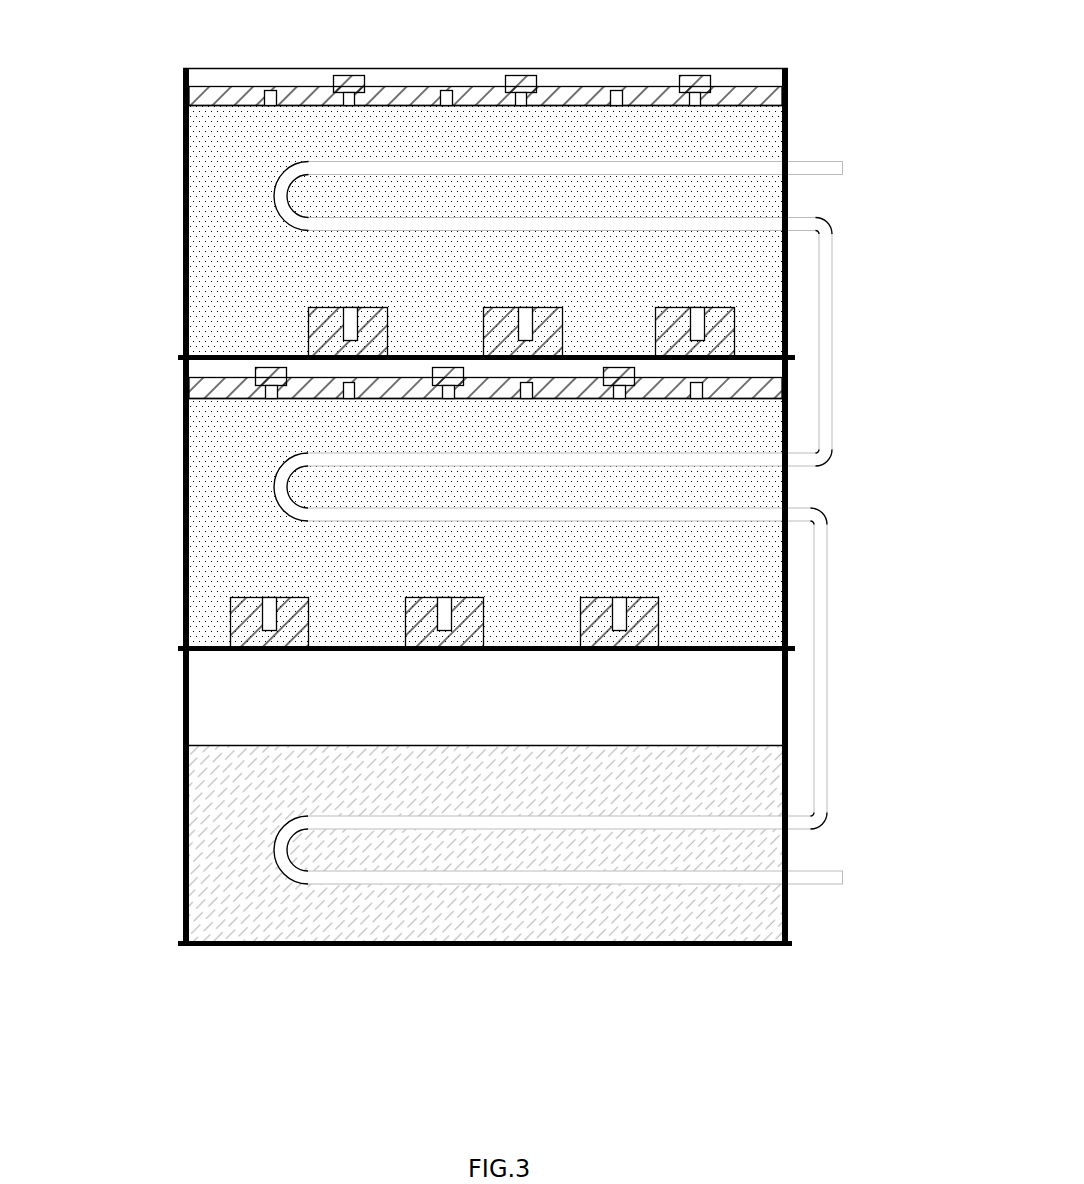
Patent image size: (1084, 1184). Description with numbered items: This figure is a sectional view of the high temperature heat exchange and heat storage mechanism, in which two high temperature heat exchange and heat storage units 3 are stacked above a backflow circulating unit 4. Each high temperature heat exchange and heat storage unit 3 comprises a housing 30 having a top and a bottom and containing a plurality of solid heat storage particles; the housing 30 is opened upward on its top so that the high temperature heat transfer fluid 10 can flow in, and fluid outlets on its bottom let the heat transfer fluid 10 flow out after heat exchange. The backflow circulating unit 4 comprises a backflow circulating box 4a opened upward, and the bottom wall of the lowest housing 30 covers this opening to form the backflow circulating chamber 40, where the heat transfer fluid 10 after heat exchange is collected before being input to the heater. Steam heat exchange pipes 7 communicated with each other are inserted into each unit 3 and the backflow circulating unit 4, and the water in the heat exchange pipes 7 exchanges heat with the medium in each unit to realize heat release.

The high temperature heat exchange and heat storage unit 3 is at (176, 161).
The housing 30 is at (184, 219).
The heat exchange pipe 7 is at (783, 167).
The backflow circulating unit 4 is at (172, 699).
The backflow circulating chamber 40 is at (765, 708).
The heat transfer fluid 10 is at (217, 785).
The backflow circulating box 4a is at (183, 818).